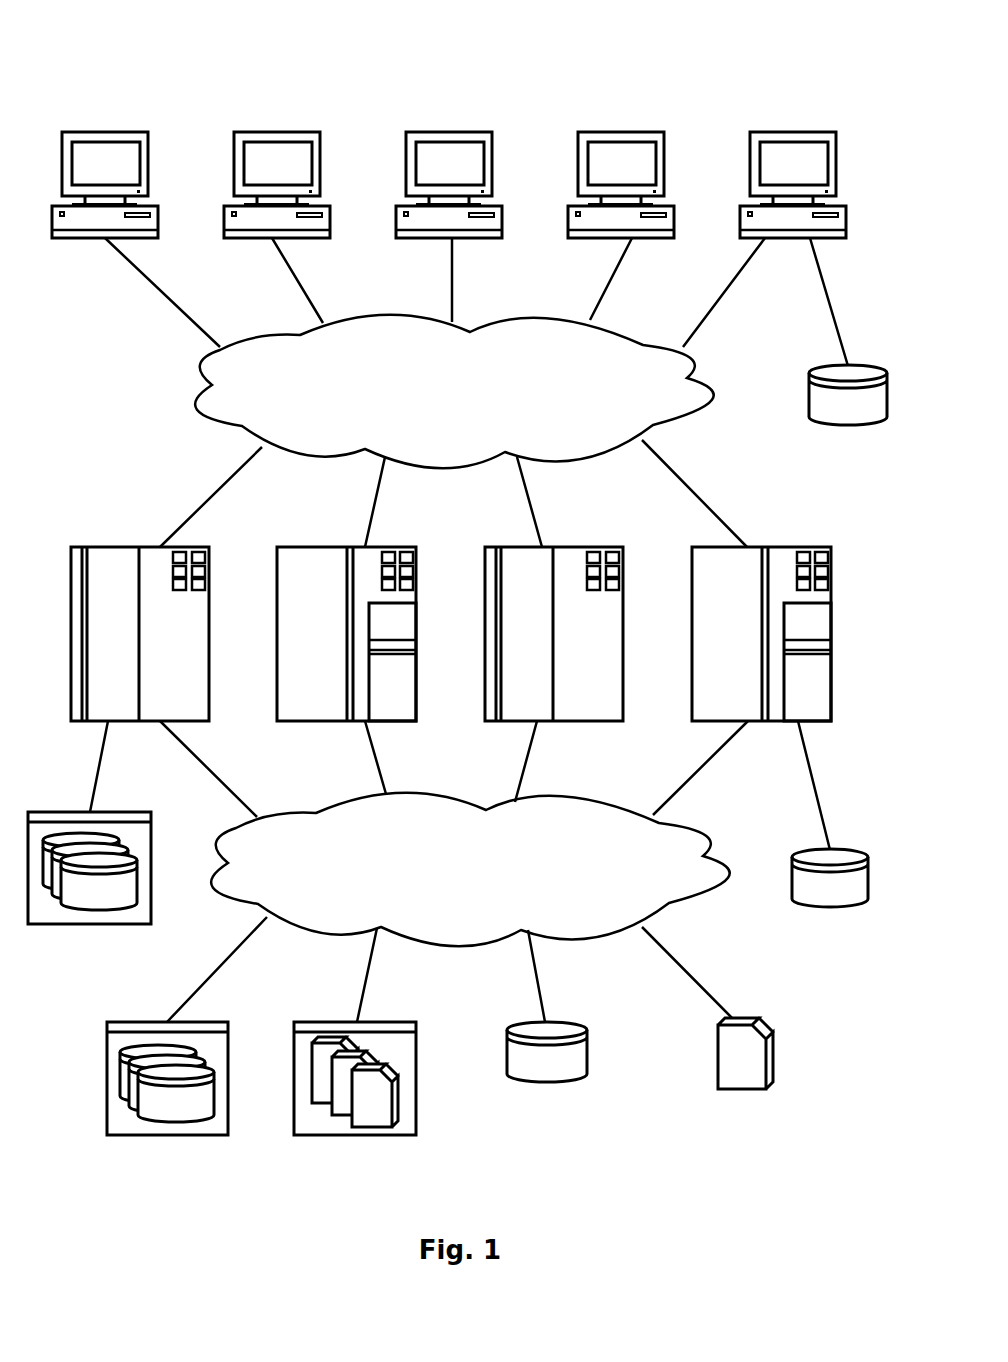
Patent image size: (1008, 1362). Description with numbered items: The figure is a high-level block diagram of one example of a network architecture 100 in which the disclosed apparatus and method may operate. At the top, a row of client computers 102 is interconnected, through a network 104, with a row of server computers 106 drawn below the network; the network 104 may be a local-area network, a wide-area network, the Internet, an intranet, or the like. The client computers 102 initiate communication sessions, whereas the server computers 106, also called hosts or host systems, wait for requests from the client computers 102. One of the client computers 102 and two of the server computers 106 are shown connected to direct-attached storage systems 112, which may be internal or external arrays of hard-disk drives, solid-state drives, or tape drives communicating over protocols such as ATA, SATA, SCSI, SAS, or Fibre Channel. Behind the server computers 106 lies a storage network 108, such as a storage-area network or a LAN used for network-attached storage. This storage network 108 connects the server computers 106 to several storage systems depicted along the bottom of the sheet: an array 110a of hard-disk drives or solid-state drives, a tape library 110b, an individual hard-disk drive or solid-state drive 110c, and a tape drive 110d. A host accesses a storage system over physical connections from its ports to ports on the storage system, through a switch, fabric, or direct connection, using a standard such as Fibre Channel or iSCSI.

The network architecture 100 is at (178, 70).
The client computer 102 is at (87, 172).
The network 104 is at (434, 416).
The server computer 106 is at (95, 640).
The storage network 108 is at (450, 893).
The array of hard-disk drives or solid-state drives 110a is at (165, 1136).
The tape library 110b is at (355, 1136).
The individual hard-disk drive or solid-state drive 110c is at (545, 1083).
The tape drive 110d is at (740, 1090).
The direct-attached storage system 112 is at (90, 925).